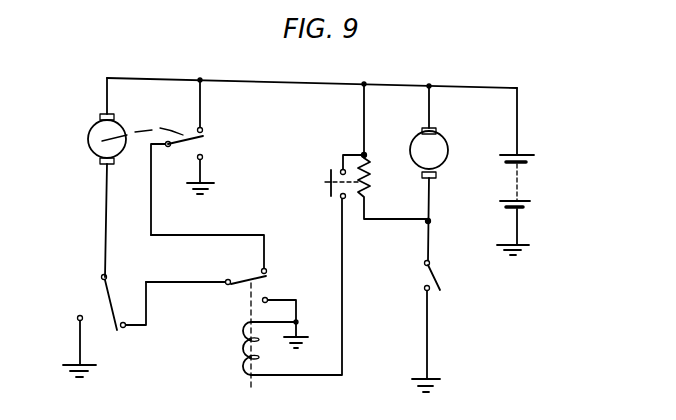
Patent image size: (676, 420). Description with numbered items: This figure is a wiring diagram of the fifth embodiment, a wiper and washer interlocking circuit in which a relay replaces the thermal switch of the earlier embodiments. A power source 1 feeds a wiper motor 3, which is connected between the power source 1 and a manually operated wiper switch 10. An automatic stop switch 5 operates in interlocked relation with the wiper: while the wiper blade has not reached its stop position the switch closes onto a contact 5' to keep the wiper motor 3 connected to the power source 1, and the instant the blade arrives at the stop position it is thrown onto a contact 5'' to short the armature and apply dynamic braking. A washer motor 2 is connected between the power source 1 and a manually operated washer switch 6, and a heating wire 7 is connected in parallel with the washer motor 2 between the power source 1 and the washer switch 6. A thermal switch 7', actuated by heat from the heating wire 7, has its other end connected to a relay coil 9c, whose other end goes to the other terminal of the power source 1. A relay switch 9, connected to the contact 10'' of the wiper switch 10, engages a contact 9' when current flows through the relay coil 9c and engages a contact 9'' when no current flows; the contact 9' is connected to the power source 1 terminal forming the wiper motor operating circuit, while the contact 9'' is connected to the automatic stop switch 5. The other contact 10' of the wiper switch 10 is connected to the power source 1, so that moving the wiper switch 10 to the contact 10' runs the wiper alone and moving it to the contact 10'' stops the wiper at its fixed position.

The power source 1 is at (519, 185).
The washer motor 2 is at (437, 147).
The wiper motor 3 is at (88, 139).
The automatic stop switch 5 is at (177, 170).
The contact 5' is at (207, 173).
The contact 5'' is at (212, 107).
The washer switch 6 is at (431, 266).
The heating wire 7 is at (393, 151).
The thermal switch 7' is at (332, 170).
The relay switch 9 is at (241, 263).
The contact 9' is at (229, 298).
The contact 9'' is at (281, 256).
The relay coil 9c is at (243, 333).
The wiper switch 10 is at (87, 299).
The contact 10' is at (66, 347).
The contact 10'' is at (132, 342).